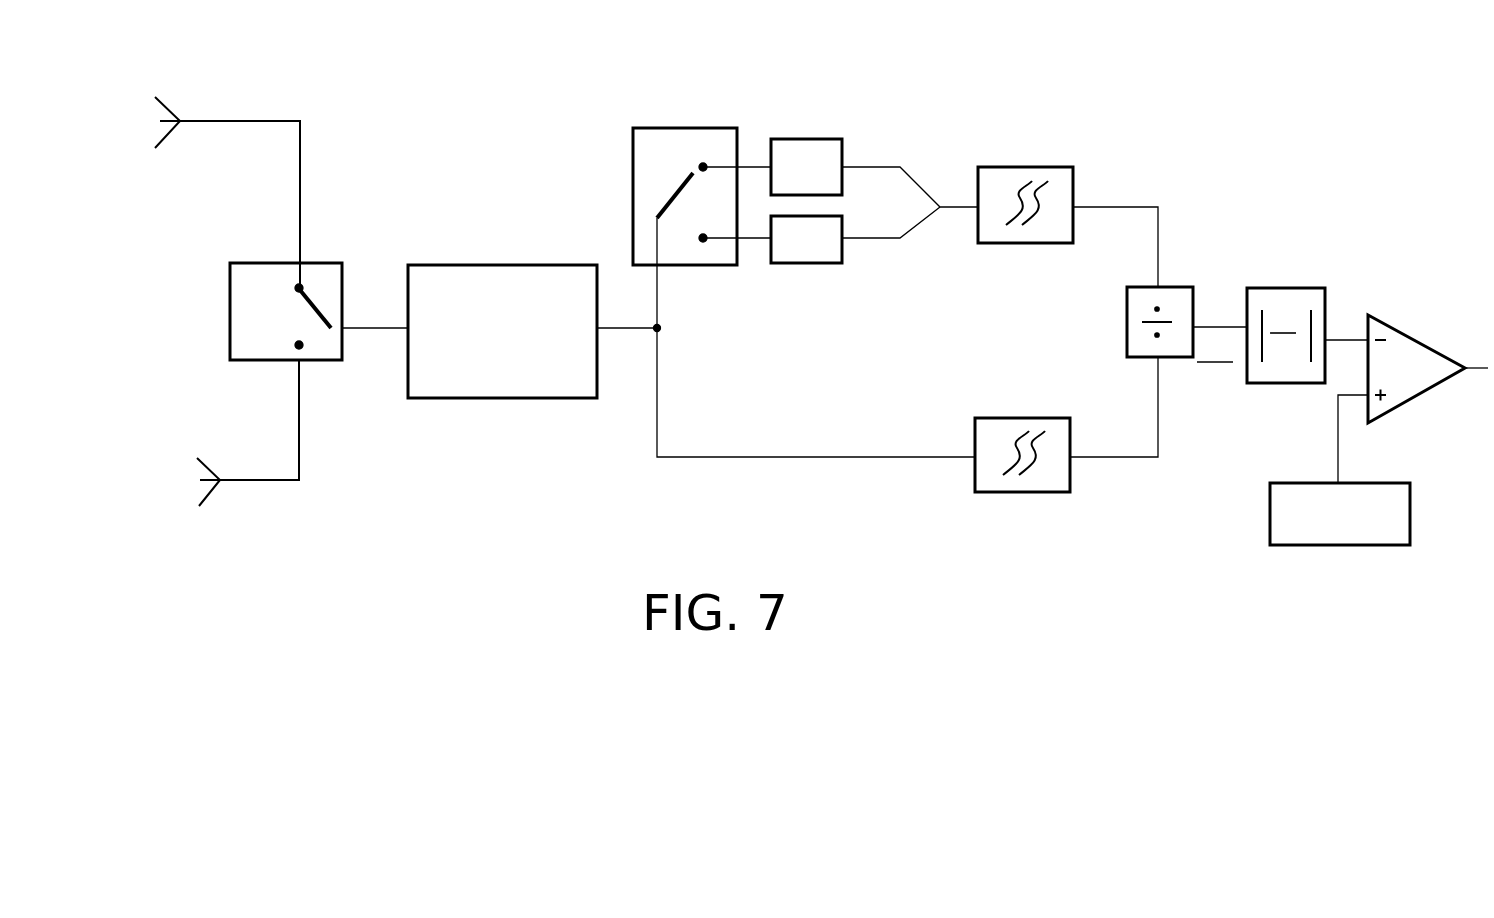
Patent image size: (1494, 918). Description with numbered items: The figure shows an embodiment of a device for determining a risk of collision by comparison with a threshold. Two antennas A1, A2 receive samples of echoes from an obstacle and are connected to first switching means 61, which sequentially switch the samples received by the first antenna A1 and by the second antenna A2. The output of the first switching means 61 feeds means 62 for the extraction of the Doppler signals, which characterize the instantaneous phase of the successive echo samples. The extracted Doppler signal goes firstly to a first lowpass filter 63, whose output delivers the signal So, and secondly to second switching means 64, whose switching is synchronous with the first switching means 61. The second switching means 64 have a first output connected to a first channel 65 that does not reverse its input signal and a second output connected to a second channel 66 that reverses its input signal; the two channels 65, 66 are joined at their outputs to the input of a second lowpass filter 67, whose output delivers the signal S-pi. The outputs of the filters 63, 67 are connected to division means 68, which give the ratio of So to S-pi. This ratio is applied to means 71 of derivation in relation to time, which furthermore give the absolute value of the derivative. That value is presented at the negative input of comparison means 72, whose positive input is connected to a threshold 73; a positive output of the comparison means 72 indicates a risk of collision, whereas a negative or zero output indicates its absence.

The first antenna A1 is at (170, 116).
The second antenna A2 is at (210, 470).
The first switching means 61 is at (262, 263).
The means for the extraction of the Doppler signals 62 is at (505, 265).
The first lowpass filter 63 is at (1013, 492).
The second switching means 64 is at (678, 128).
The first channel 65 is at (806, 139).
The second channel 66 is at (817, 264).
The second lowpass filter 67 is at (1028, 167).
The division means 68 is at (1180, 287).
The means of derivation in relation to time 71 is at (1280, 288).
The comparison means 72 is at (1405, 334).
The threshold 73 is at (1325, 545).